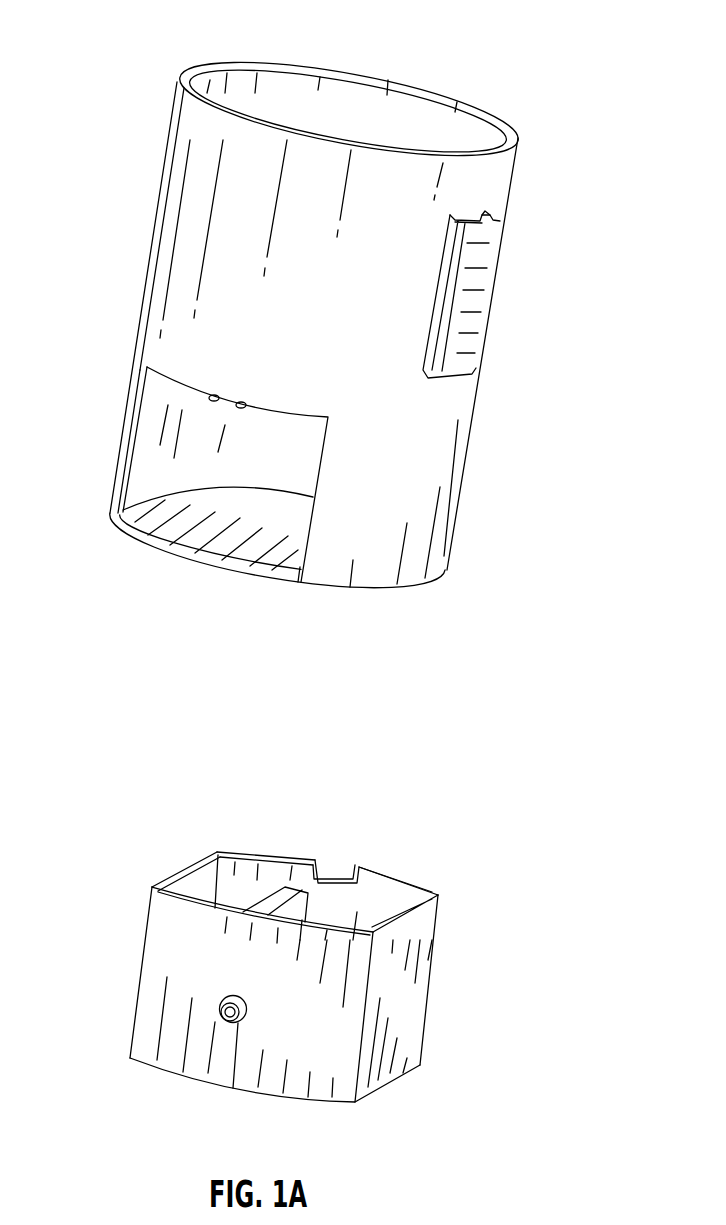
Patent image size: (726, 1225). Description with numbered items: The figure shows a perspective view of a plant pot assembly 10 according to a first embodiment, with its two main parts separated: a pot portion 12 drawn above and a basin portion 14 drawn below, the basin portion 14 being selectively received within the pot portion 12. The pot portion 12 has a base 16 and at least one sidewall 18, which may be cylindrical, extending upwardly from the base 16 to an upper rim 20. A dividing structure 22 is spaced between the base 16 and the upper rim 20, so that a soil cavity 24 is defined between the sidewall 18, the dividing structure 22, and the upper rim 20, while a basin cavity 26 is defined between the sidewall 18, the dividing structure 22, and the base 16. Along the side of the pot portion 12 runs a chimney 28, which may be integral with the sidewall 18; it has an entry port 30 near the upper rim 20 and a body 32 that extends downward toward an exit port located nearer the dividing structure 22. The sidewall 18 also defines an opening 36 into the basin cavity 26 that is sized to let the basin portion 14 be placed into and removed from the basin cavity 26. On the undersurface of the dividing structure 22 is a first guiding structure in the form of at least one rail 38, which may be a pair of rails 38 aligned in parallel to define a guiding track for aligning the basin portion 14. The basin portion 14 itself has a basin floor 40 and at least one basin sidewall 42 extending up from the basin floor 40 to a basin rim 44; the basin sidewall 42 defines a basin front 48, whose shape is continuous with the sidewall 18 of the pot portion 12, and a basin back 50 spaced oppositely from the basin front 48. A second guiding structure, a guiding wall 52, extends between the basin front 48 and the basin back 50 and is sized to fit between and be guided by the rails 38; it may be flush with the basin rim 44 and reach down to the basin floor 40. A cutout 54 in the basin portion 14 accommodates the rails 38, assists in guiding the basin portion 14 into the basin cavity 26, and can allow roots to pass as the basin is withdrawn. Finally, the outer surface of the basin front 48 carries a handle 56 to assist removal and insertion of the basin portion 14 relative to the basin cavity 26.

The plant pot assembly 10 is at (527, 93).
The pot portion 12 is at (518, 150).
The basin portion 14 is at (198, 848).
The base 16 is at (183, 555).
The sidewall 18 is at (175, 192).
The upper rim 20 is at (197, 70).
The dividing structure 22 is at (150, 367).
The soil cavity 24 is at (361, 122).
The basin cavity 26 is at (271, 467).
The chimney 28 is at (497, 314).
The entry port 30 is at (493, 214).
The body 32 is at (490, 278).
The opening 36 is at (228, 558).
The rail 38 is at (212, 397).
The basin floor 40 is at (162, 1073).
The basin sidewall 42 is at (143, 937).
The basin rim 44 is at (155, 886).
The basin front 48 is at (187, 962).
The basin back 50 is at (272, 862).
The guiding wall 52 is at (288, 888).
The cutout 54 is at (342, 878).
The handle 56 is at (240, 1027).